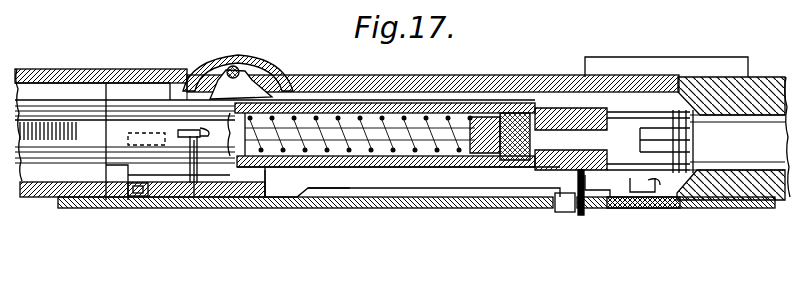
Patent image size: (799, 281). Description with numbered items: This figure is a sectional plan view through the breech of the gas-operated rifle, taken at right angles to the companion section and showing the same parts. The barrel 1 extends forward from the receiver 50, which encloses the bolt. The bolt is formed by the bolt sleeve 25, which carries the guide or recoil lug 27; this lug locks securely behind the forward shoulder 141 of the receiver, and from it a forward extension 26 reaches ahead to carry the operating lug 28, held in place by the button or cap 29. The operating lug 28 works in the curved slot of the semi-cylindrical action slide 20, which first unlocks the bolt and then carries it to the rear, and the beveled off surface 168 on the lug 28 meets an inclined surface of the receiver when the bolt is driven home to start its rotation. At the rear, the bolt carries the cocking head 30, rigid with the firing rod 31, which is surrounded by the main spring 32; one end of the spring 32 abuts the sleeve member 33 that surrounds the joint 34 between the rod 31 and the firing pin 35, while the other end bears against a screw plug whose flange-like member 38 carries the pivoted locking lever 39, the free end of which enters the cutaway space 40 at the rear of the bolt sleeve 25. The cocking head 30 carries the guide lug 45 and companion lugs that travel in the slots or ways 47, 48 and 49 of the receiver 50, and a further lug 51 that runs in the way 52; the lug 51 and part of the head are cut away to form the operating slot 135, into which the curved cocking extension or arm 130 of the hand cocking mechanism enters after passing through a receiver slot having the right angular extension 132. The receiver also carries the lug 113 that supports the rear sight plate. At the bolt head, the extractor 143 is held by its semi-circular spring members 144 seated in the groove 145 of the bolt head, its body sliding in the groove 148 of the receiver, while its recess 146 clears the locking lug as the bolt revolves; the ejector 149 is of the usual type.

The barrel 1 is at (760, 85).
The action slide 20 is at (410, 197).
The bolt sleeve 25 is at (315, 104).
The forward extension 26 is at (456, 178).
The guide or recoil lug 27 is at (285, 190).
The operating lug 28 is at (563, 205).
The button or cap 29 is at (584, 208).
The cocking head 30 is at (145, 108).
The firing rod 31 is at (340, 168).
The main spring 32 is at (392, 118).
The sleeve member 33 is at (478, 118).
The joint 34 is at (522, 114).
The firing pin 35 is at (582, 138).
The flange-like member 38 is at (216, 64).
The locking lever 39 is at (193, 197).
The cutaway space 40 is at (218, 163).
The guide lug 45 is at (122, 83).
The slot or way 47 is at (112, 136).
The slot or way 48 is at (72, 92).
The slot or way 49 is at (33, 110).
The receiver 50 is at (44, 76).
The lug 51 is at (112, 172).
The way 52 is at (38, 190).
The lug 113 is at (700, 57).
The cocking extension or arm 130 is at (138, 193).
The right angular extension 132 is at (128, 190).
The operating slot 135 is at (158, 165).
The forward shoulder 141 is at (256, 200).
The extractor 143 is at (662, 188).
The semi-circular spring members 144 is at (672, 140).
The groove 145 is at (676, 112).
The recess 146 is at (656, 205).
The groove 148 is at (625, 198).
The ejector 149 is at (252, 84).
The beveled off surface 168 is at (592, 200).